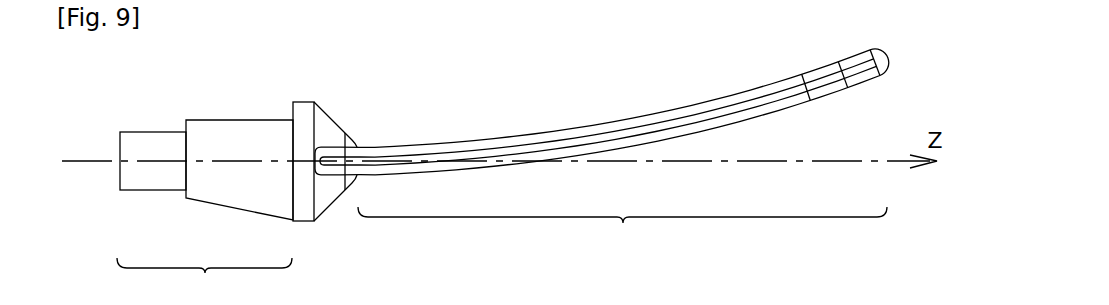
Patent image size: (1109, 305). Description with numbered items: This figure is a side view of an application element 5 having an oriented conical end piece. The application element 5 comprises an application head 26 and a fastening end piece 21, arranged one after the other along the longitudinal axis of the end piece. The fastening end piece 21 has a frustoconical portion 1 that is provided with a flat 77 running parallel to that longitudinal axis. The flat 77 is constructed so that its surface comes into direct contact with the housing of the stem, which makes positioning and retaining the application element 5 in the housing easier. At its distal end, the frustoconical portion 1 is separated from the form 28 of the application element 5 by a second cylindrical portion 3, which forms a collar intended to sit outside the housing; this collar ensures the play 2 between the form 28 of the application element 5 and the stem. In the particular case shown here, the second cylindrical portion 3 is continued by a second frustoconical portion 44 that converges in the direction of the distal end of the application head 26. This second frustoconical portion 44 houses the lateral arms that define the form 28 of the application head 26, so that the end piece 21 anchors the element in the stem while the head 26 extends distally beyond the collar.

The frustoconical portion 1 is at (207, 222).
The play 2 is at (155, 145).
The second cylindrical portion 3 is at (305, 108).
The application element 5 is at (152, 64).
The fastening end piece 21 is at (204, 281).
The application head 26 is at (887, 258).
The form 28 is at (622, 230).
The second frustoconical portion 44 is at (332, 133).
The flat 77 is at (240, 118).